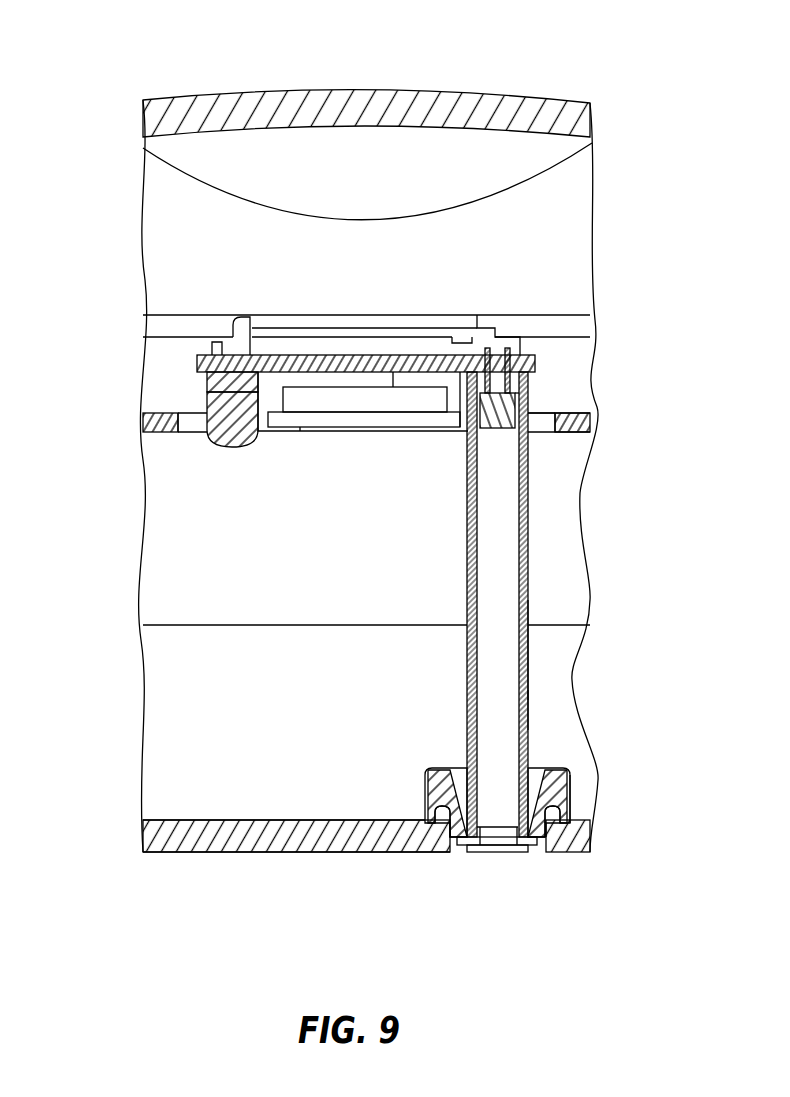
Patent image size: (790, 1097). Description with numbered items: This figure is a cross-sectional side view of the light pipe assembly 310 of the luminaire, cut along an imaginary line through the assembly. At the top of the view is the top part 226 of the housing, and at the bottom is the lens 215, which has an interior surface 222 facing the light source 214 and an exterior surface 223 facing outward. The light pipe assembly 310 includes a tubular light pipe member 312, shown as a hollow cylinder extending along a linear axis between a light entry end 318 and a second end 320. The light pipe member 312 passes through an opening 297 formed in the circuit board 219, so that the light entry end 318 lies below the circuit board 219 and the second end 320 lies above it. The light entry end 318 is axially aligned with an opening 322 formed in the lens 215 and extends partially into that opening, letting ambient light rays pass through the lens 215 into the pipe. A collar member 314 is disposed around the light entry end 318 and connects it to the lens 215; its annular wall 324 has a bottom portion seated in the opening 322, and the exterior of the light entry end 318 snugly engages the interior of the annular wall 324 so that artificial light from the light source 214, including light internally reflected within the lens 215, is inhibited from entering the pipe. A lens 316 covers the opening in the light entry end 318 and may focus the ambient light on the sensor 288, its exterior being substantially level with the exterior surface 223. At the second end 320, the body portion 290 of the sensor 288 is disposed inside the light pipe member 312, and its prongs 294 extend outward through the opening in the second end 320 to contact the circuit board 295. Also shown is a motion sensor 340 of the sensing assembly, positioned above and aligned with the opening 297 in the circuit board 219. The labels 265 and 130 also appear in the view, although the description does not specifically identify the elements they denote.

The top part of the housing 226 is at (236, 94).
The seal 265 is at (275, 313).
The prongs 294 is at (496, 322).
The circuit board 295 is at (508, 347).
The second end 320 is at (524, 372).
The body portion 290 is at (492, 432).
The sensor 288 is at (524, 398).
The tube 130 is at (530, 590).
The light source 214 is at (138, 422).
The circuit board 219 is at (548, 420).
The opening 297 is at (542, 424).
The motion sensor 340 is at (232, 449).
The tubular light pipe member 312 is at (531, 643).
The light pipe assembly 310 is at (555, 692).
The annular wall 324 is at (455, 775).
The light entry end 318 is at (530, 770).
The collar member 314 is at (574, 797).
The lens 215 is at (190, 855).
The exterior surface 223 is at (283, 853).
The interior surface 222 is at (240, 820).
The opening 322 is at (450, 856).
The lens 316 is at (512, 856).